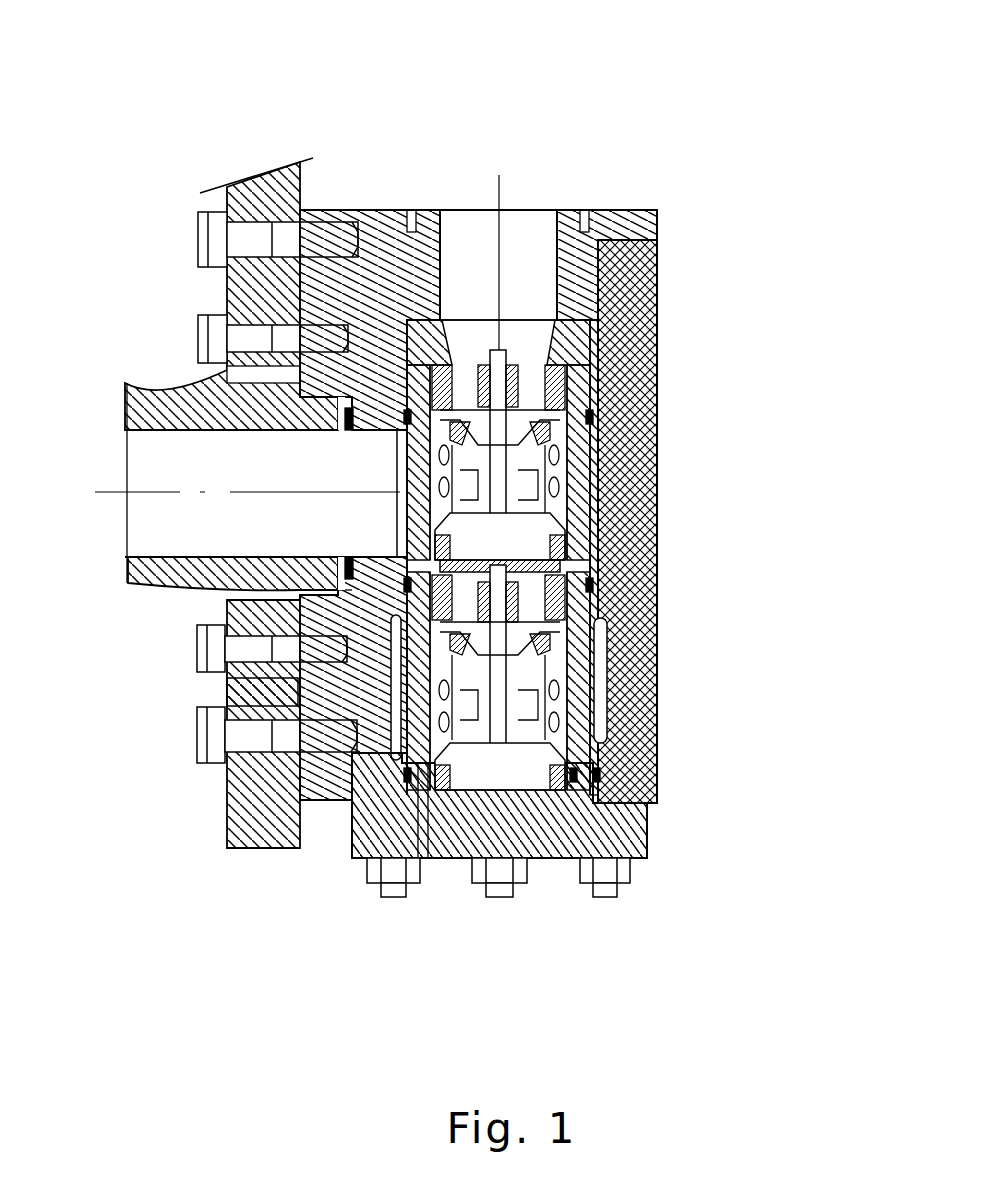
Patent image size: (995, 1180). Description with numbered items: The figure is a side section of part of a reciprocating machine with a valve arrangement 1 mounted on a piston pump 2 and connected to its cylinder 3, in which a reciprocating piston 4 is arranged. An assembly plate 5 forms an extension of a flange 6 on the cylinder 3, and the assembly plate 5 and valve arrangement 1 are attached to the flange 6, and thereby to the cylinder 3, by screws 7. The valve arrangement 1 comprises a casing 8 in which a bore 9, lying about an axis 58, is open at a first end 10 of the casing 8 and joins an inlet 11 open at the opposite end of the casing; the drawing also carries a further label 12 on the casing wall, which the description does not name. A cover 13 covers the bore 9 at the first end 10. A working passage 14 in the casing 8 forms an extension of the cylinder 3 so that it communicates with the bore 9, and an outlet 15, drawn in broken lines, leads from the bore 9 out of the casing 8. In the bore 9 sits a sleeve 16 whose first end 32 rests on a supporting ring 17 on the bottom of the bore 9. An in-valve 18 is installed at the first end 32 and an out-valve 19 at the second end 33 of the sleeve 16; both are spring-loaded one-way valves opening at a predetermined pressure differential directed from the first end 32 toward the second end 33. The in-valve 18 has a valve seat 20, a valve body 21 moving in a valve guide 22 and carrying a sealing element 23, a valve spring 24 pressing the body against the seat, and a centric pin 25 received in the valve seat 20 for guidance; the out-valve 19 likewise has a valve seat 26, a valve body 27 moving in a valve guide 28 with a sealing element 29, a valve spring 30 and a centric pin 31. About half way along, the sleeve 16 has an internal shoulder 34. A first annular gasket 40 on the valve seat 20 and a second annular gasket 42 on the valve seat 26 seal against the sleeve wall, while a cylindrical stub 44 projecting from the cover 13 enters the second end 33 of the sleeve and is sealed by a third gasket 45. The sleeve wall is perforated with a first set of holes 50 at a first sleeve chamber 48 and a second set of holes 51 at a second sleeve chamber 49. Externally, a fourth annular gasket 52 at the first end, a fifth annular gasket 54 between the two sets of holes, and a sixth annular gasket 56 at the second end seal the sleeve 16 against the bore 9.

The valve arrangement 1 is at (465, 200).
The piston pump 2 is at (152, 208).
The cylinder 3 is at (138, 598).
The reciprocating piston 4 is at (150, 463).
The assembly plate 5 is at (227, 802).
The flange 6 is at (220, 308).
The screws 7 is at (205, 667).
The casing 8 is at (385, 210).
The bore 9 is at (657, 318).
The first end of the casing 10 is at (657, 815).
The inlet 11 is at (546, 214).
The housing wall 12 is at (652, 222).
The cover 13 is at (585, 872).
The working passage 14 is at (227, 700).
The outlet 15 is at (350, 830).
The sleeve 16 is at (431, 210).
The supporting ring 17 is at (657, 230).
The in-valve 18 is at (657, 404).
The out-valve 19 is at (657, 650).
The valve seat 20 is at (627, 212).
The valve body 21 is at (516, 400).
The valve guide 22 is at (657, 465).
The sealing element 23 is at (478, 262).
The valve spring 24 is at (657, 386).
The centric pin 25 is at (511, 330).
The valve seat 26 is at (657, 530).
The valve body 27 is at (660, 586).
The valve guide 28 is at (657, 752).
The sealing element 29 is at (657, 612).
The valve spring 30 is at (657, 694).
The centric pin 31 is at (404, 540).
The first end of the sleeve 32 is at (657, 288).
The second end of the sleeve 33 is at (650, 852).
The internal shoulder 34 is at (657, 498).
The first annular gasket 40 is at (657, 342).
The second annular gasket 42 is at (657, 580).
The cylindrical stub 44 is at (555, 842).
The third gasket 45 is at (460, 800).
The first sleeve chamber 48 is at (405, 458).
The second sleeve chamber 49 is at (350, 827).
The first set of holes 50 is at (657, 440).
The second set of holes 51 is at (657, 708).
The fourth annular gasket 52 is at (657, 367).
The fifth annular gasket 54 is at (657, 557).
The sixth annular gasket 56 is at (657, 770).
The axis 58 is at (497, 905).